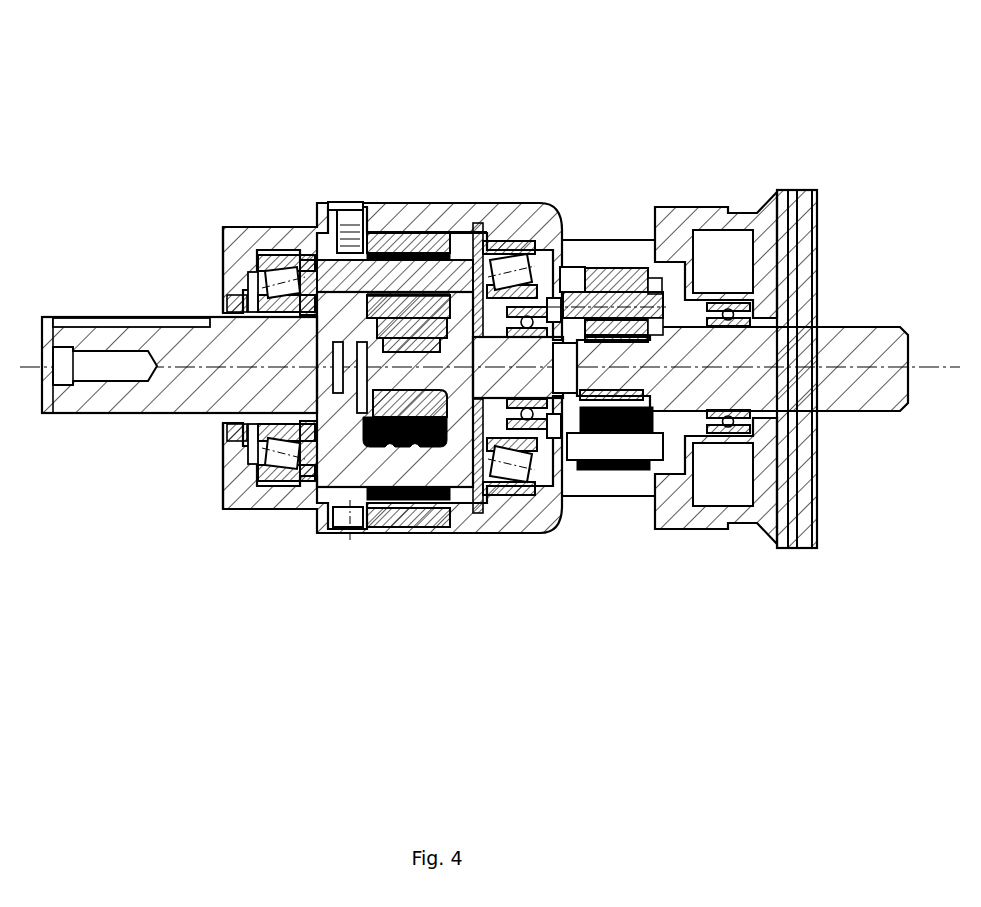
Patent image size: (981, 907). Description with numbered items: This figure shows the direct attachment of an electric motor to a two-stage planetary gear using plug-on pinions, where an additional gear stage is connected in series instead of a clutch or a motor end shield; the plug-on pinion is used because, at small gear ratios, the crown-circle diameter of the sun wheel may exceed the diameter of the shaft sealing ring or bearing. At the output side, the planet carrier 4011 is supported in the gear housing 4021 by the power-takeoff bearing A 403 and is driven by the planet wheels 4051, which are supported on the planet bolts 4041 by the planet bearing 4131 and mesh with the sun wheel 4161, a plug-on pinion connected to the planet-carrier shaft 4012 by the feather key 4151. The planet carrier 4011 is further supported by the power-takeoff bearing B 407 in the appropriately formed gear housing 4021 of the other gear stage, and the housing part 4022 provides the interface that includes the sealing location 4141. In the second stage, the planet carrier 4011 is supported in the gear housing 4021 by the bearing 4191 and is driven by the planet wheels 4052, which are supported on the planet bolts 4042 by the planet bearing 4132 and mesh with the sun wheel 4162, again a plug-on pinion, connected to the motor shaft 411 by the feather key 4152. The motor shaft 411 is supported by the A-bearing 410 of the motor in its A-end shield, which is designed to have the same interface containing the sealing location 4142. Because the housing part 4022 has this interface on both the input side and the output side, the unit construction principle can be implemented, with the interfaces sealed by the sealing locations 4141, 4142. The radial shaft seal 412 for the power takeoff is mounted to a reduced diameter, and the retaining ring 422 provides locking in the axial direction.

The planet carrier 4011 is at (148, 412).
The planet-carrier shaft 4012 is at (372, 487).
The gear housing 4021 is at (410, 262).
The housing part 4022 is at (612, 268).
The power-takeoff bearing A 403 is at (226, 300).
The planet bolt 4041 is at (444, 220).
The planet bolt 4042 is at (643, 264).
The planet wheel 4051 is at (317, 230).
The planet wheel 4052 is at (660, 403).
The power-takeoff bearing B 407 is at (497, 258).
The A-bearing of the motor 410 is at (722, 303).
The motor shaft for plug-on pinion 411 is at (818, 327).
The radial shaft seal for the power takeoff 412 is at (222, 316).
The planet bearing 4131 is at (388, 212).
The planet bearing 4132 is at (485, 530).
The sealing location 4141 is at (390, 443).
The sealing location 4142 is at (703, 527).
The feather key 4151 is at (237, 227).
The feather key 4152 is at (594, 428).
The sun wheel (plug-on pinion) 4161 is at (352, 225).
The sun wheel (plug-on pinion) 4162 is at (610, 430).
The bearing 4191 is at (528, 283).
The retaining ring 422 is at (573, 267).